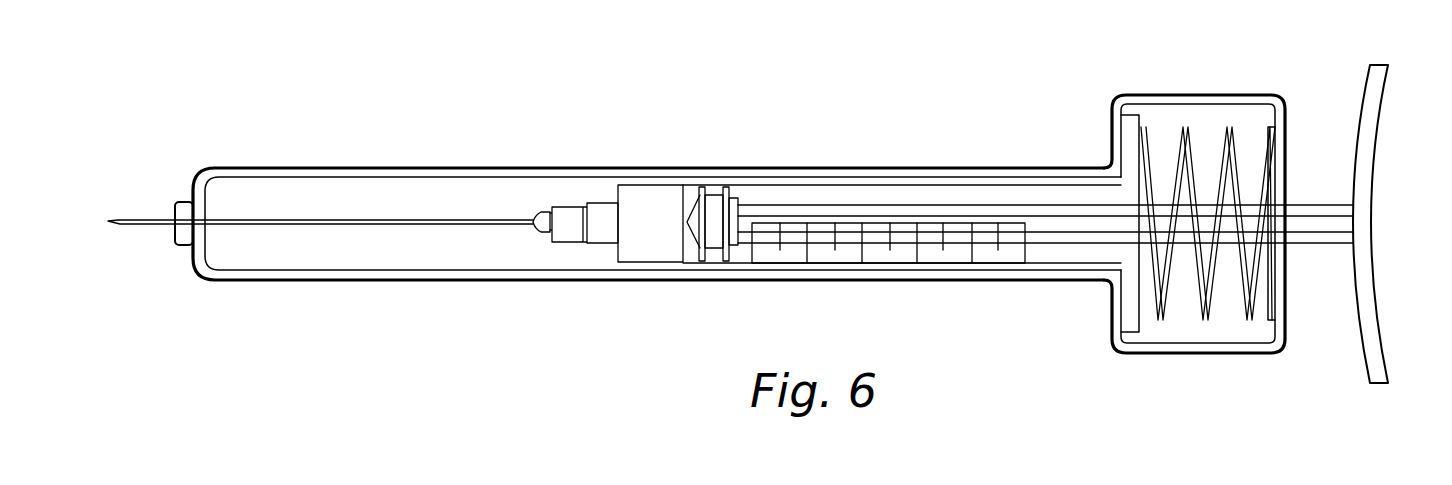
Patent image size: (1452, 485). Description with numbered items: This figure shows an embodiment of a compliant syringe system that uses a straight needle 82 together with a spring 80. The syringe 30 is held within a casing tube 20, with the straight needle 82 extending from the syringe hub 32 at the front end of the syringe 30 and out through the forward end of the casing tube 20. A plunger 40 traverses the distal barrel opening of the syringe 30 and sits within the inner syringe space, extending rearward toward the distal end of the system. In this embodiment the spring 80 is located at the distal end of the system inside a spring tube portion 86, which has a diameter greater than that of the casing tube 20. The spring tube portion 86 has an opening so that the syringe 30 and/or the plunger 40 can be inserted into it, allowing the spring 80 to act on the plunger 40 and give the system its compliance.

The casing tube 20 is at (450, 280).
The syringe 30 is at (950, 186).
The syringe hub 32 is at (645, 192).
The plunger 40 is at (1330, 243).
The spring 80 is at (1178, 157).
The straight needle 82 is at (143, 222).
The spring tube portion 86 is at (1242, 95).